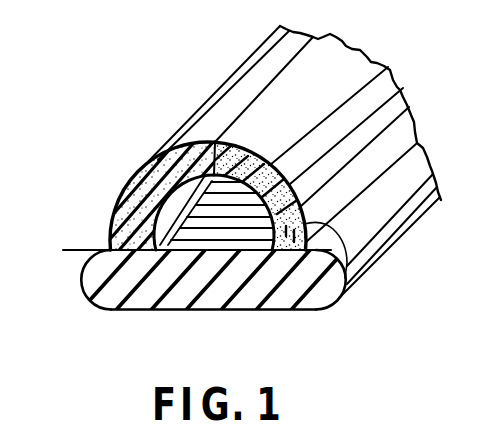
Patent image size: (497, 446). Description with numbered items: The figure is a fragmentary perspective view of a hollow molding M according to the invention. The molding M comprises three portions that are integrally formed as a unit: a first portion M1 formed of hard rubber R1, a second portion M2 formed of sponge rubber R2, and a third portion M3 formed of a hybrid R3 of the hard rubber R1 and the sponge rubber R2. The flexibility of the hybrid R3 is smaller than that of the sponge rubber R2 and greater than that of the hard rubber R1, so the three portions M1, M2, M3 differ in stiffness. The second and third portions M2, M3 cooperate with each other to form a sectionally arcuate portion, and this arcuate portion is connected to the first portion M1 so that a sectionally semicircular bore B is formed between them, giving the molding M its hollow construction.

The hollow molding M is at (413, 66).
The first portion M1 is at (213, 307).
The second portion M2 is at (169, 210).
The third portion M3 is at (304, 213).
The hard rubber R1 is at (289, 309).
The sponge rubber R2 is at (118, 212).
The hybrid R3 is at (264, 162).
The sectionally semicircular bore B is at (186, 249).